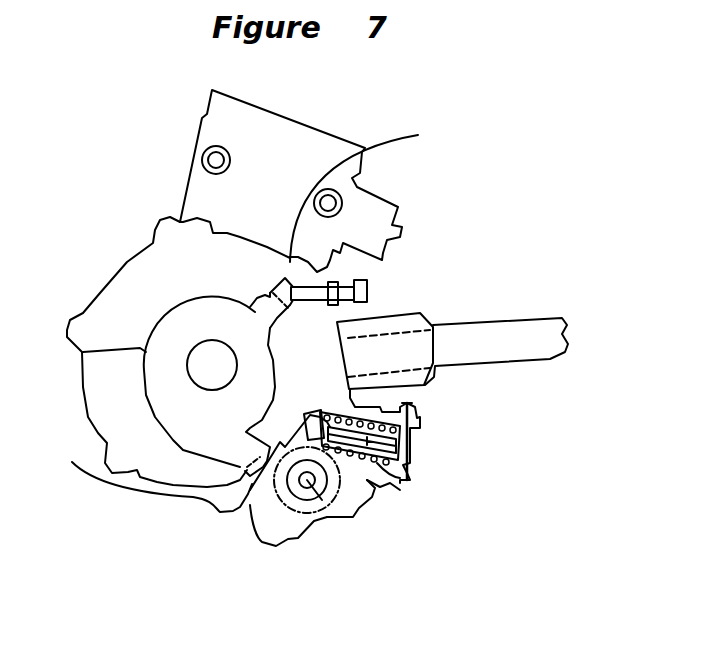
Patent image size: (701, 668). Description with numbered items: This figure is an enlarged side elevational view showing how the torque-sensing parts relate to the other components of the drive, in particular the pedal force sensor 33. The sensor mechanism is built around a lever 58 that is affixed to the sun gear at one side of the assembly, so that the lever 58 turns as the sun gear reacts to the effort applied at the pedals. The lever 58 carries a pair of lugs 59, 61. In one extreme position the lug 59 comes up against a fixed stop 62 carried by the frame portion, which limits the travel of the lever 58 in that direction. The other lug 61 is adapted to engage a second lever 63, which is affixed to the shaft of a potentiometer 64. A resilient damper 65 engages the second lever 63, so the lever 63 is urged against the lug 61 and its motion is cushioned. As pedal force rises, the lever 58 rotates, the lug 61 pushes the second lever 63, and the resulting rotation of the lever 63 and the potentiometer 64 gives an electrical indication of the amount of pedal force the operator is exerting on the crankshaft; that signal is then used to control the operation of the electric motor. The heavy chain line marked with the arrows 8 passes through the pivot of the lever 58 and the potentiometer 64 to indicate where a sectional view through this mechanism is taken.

The section line 8- 8 is at (66, 163).
The pedal force sensor 33 is at (248, 492).
The lever 58 is at (83, 352).
The lug 59 is at (317, 181).
The lug 61 is at (146, 474).
The fixed stop 62 is at (367, 290).
The second lever 63 is at (253, 513).
The potentiometer 64 is at (377, 490).
The resilient damper 65 is at (400, 490).